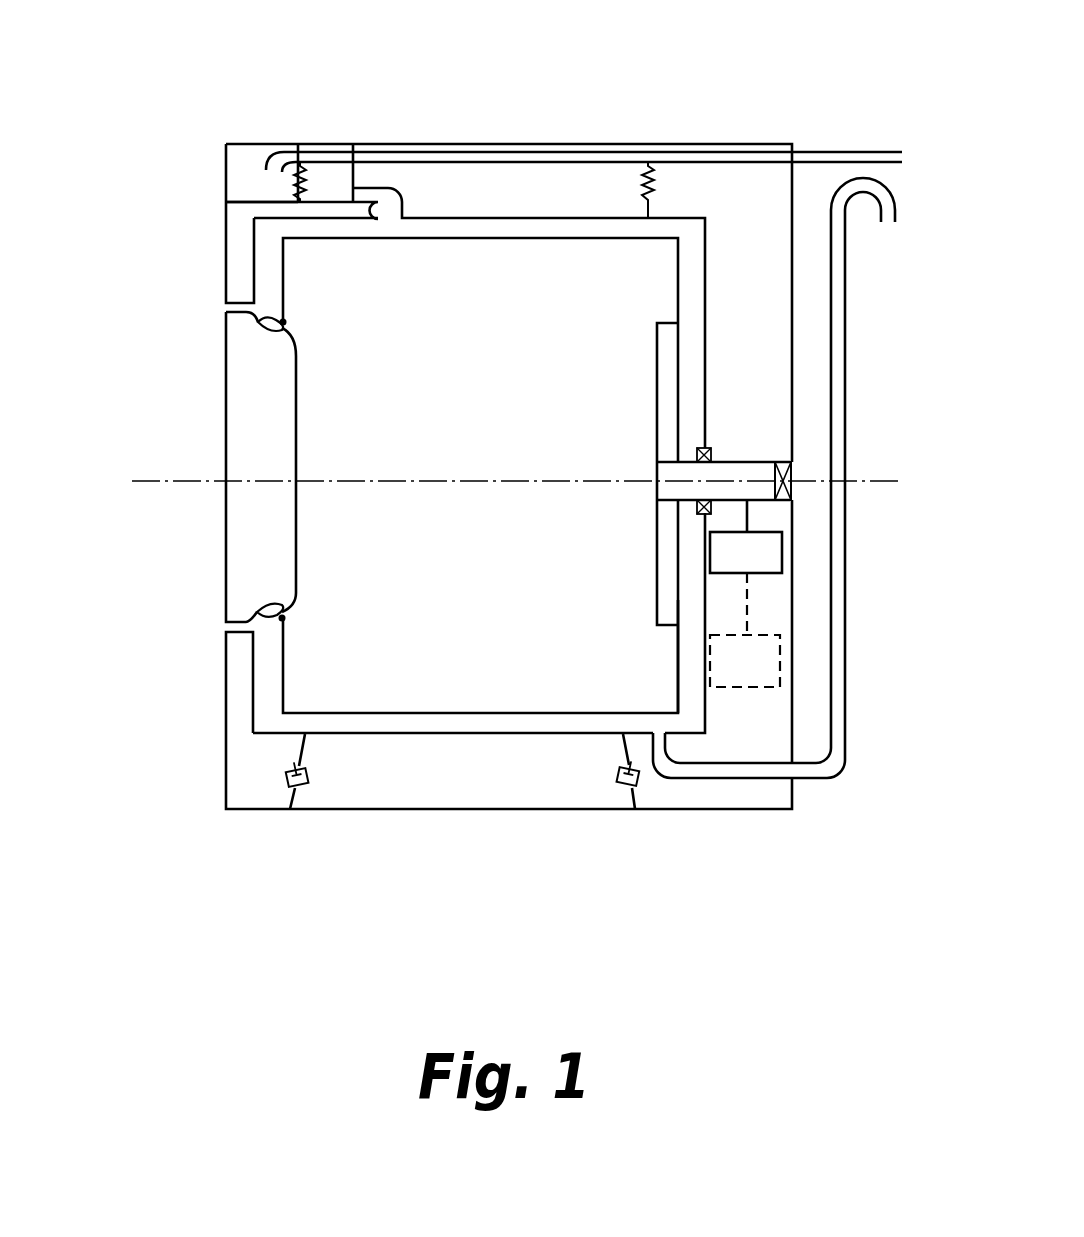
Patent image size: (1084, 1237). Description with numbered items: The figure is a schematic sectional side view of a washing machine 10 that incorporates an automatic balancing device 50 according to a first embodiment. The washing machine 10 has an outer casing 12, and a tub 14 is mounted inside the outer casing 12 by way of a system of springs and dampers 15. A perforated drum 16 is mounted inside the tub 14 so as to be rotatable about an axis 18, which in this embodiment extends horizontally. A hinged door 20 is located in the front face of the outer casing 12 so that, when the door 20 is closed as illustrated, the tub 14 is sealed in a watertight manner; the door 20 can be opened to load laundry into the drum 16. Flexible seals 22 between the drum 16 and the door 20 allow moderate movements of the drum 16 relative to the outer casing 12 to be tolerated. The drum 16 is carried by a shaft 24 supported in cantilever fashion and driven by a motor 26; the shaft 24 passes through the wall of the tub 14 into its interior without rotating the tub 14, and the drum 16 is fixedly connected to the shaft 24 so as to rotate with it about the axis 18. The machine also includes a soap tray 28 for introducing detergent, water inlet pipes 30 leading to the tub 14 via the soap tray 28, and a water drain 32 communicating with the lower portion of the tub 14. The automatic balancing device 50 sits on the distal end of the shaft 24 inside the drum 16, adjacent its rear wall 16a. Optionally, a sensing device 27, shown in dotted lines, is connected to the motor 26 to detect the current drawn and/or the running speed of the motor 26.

The washing machine 10 is at (763, 87).
The outer casing 12 is at (793, 322).
The tub 14 is at (705, 412).
The springs and dampers 15 is at (312, 192).
The perforated drum 16 is at (502, 237).
The rear wall 16a is at (675, 668).
The axis 18 is at (185, 481).
The hinged door 20 is at (240, 578).
The flexible seals 22 is at (283, 322).
The shaft 24 is at (755, 472).
The motor 26 is at (768, 548).
The sensing device 27 is at (763, 662).
The soap tray 28 is at (240, 178).
The water inlet pipes 30 is at (850, 157).
The water drain 32 is at (837, 728).
The automatic balancing device 50 is at (667, 562).